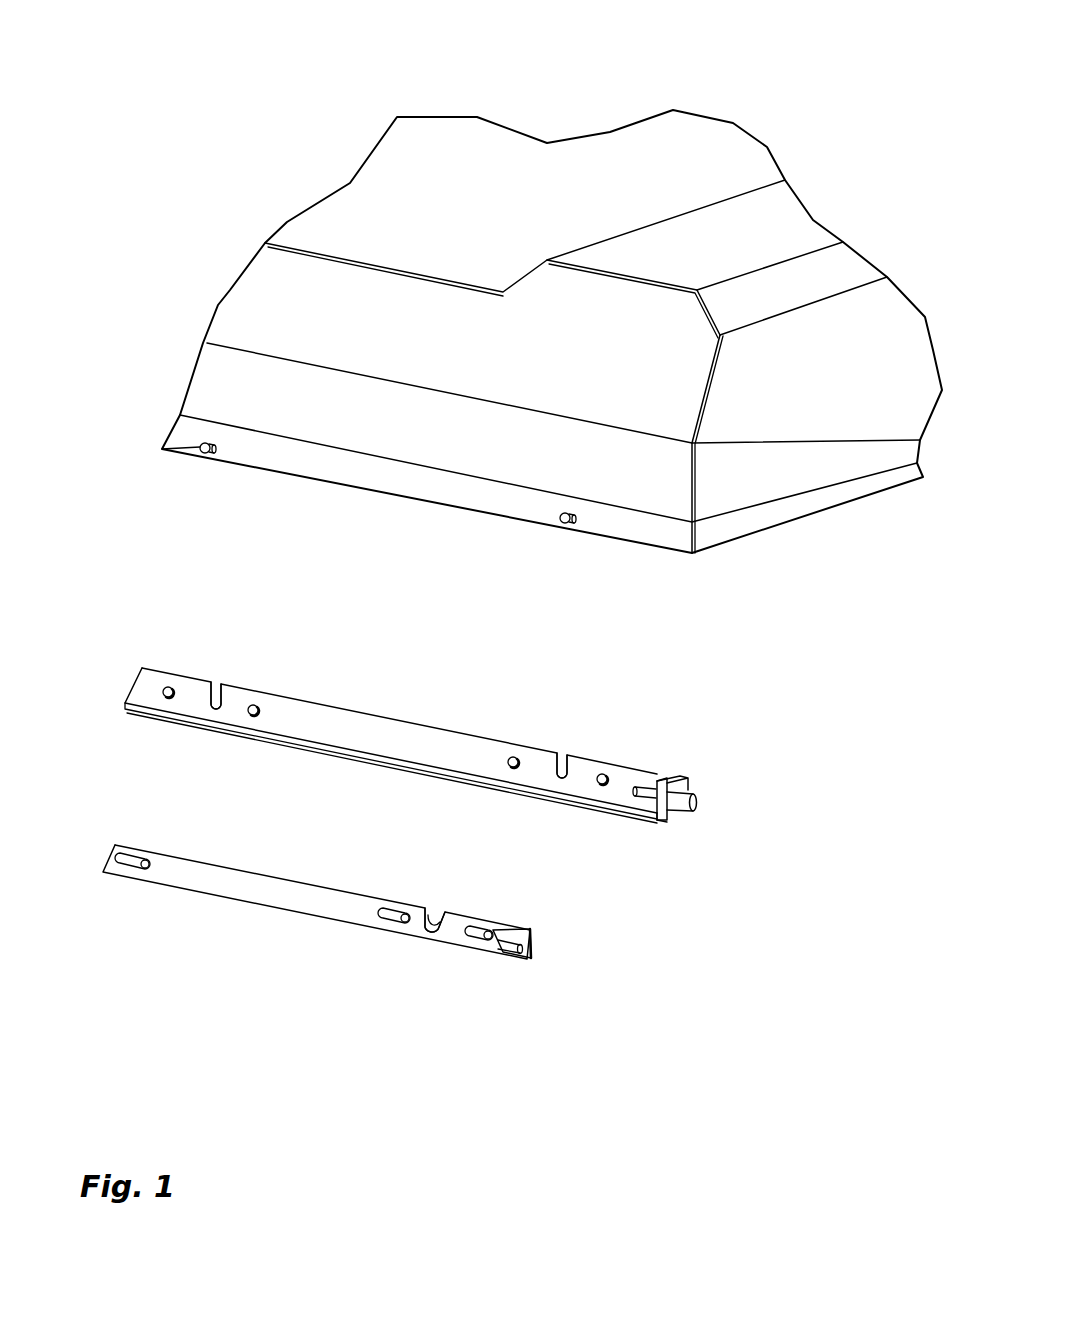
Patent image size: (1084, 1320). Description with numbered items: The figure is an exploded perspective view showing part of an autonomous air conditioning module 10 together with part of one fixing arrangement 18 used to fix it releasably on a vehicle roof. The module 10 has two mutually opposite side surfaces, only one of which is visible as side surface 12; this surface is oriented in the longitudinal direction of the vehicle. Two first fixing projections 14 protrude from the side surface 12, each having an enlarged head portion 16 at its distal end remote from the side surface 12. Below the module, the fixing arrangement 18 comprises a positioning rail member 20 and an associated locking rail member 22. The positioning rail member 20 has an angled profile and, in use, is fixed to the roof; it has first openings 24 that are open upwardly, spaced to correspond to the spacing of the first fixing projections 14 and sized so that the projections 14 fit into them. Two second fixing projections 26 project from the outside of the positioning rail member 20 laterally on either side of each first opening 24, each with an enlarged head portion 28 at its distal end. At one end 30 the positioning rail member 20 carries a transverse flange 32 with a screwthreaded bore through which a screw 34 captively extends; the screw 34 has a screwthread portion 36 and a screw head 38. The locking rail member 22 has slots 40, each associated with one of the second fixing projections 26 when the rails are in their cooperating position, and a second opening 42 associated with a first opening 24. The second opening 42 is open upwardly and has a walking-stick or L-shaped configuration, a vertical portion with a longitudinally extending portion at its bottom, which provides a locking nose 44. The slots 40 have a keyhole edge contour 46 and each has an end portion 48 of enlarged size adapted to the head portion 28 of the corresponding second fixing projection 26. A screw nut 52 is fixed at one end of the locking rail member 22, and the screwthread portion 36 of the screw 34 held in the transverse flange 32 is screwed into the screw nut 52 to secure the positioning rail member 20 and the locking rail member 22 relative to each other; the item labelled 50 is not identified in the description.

The autonomous air conditioning module 10 is at (545, 171).
The side surface 12 is at (347, 467).
The first fixing projection 14 is at (192, 458).
The enlarged head portion 16 is at (167, 442).
The fixing arrangement 18 is at (749, 820).
The positioning rail member 20 is at (425, 695).
The locking rail member 22 is at (300, 874).
The first opening 24 is at (217, 679).
The second fixing projection 26 is at (173, 675).
The enlarged head portion 28 is at (253, 715).
The end 30 is at (677, 831).
The transverse flange 32 is at (653, 813).
The screw 34 is at (699, 779).
The screwthread portion 36 is at (632, 790).
The screw head 38 is at (697, 800).
The slot 40 is at (128, 889).
The second opening 42 is at (430, 903).
The locking nose 44 is at (430, 937).
The keyhole edge contour 46 is at (123, 873).
The end portion 48 is at (143, 873).
The end clip 50 is at (521, 968).
The screw nut 52 is at (503, 947).